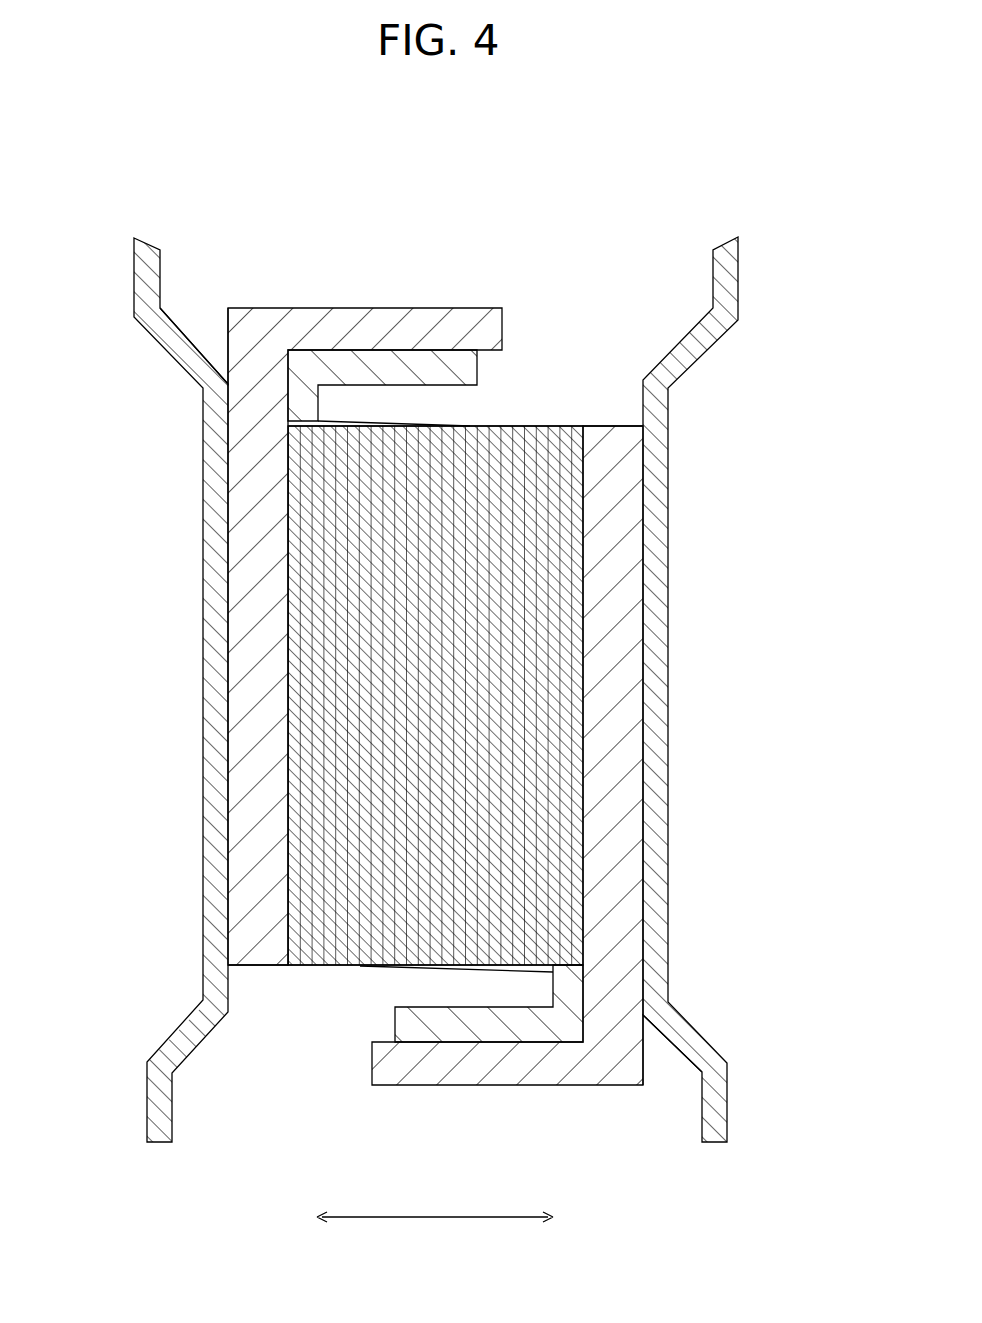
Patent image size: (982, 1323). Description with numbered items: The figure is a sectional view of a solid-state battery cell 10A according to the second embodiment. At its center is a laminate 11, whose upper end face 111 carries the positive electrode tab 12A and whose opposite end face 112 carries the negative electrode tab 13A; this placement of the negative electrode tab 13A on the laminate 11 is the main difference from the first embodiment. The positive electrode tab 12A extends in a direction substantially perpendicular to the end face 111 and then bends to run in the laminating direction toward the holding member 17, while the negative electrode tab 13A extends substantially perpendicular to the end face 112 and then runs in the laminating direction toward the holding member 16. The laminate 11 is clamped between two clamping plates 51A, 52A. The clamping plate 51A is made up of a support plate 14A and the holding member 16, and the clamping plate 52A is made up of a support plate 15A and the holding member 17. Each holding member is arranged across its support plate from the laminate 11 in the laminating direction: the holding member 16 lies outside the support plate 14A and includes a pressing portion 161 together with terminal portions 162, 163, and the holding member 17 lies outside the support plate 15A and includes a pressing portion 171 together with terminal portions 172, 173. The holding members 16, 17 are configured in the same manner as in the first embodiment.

The solid-state battery cell 10A is at (676, 147).
The laminate 11 is at (377, 980).
The end face 111 is at (558, 421).
The end face 112 is at (312, 968).
The positive electrode tab 12A is at (412, 380).
The negative electrode tab 13A is at (489, 1022).
The support plate 14A is at (257, 332).
The support plate 15A is at (575, 1065).
The holding member 16 is at (191, 427).
The pressing portion 161 is at (215, 689).
The terminal portion 162 is at (138, 278).
The terminal portion 163 is at (147, 1092).
The holding member 17 is at (682, 427).
The pressing portion 171 is at (667, 691).
The terminal portion 172 is at (735, 280).
The terminal portion 173 is at (720, 1090).
The clamping plate 51A is at (205, 312).
The clamping plate 52A is at (665, 1080).